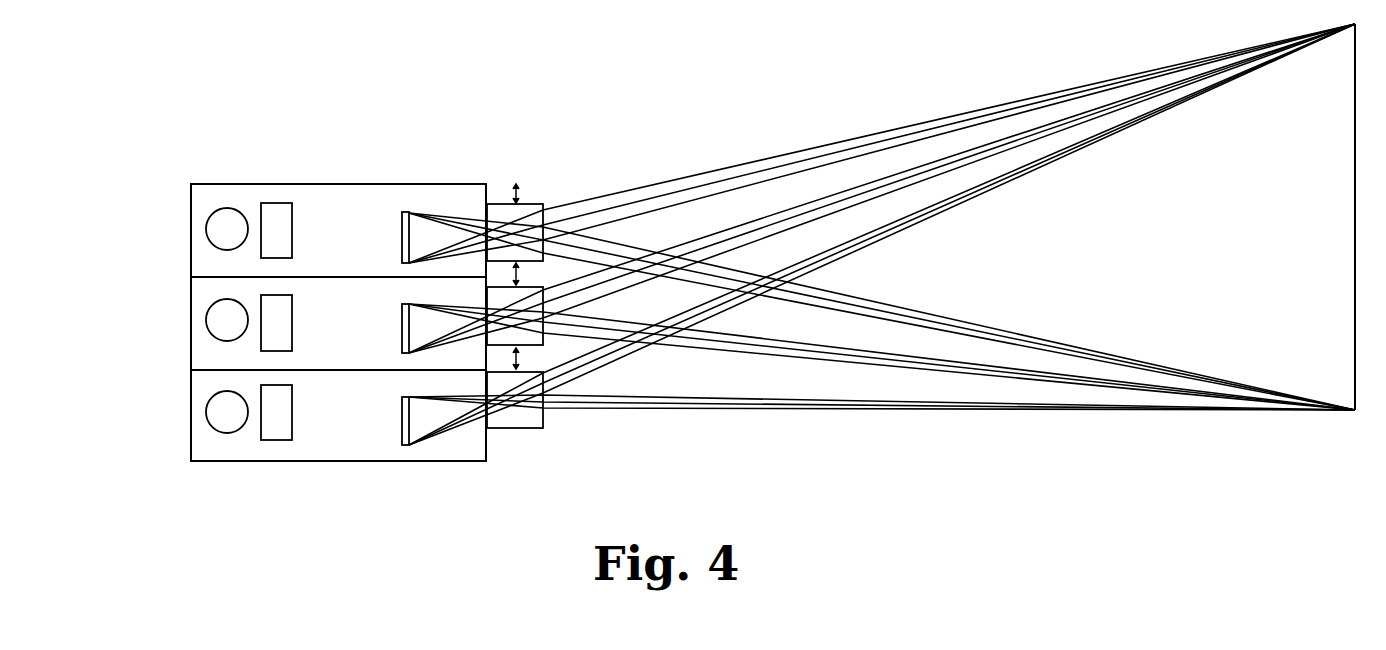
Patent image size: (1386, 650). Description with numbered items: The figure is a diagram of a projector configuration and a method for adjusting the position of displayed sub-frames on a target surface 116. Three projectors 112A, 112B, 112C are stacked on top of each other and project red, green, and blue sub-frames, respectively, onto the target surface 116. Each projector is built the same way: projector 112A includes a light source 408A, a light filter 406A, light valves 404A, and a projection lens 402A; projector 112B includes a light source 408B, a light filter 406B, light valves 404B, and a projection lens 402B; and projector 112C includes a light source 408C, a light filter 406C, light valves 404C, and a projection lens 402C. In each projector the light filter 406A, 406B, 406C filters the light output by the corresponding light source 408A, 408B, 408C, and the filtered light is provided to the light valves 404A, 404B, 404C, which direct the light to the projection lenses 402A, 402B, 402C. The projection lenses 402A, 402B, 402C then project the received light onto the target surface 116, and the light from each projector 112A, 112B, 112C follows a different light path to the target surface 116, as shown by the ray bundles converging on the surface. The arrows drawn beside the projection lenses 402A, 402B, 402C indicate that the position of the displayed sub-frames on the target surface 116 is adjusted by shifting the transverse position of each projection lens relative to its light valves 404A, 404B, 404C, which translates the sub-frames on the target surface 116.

The projector 112A is at (191, 221).
The projector 112B is at (191, 318).
The projector 112C is at (191, 408).
The light source 408A is at (215, 212).
The light source 408B is at (213, 303).
The light source 408C is at (213, 428).
The light filter 406A is at (268, 203).
The light filter 406B is at (292, 323).
The light filter 406C is at (270, 440).
The light valves 404A is at (402, 245).
The light valves 404B is at (402, 338).
The light valves 404C is at (402, 437).
The projection lens 402A is at (533, 204).
The projection lens 402B is at (499, 287).
The projection lens 402C is at (505, 427).
The target surface 116 is at (1355, 240).